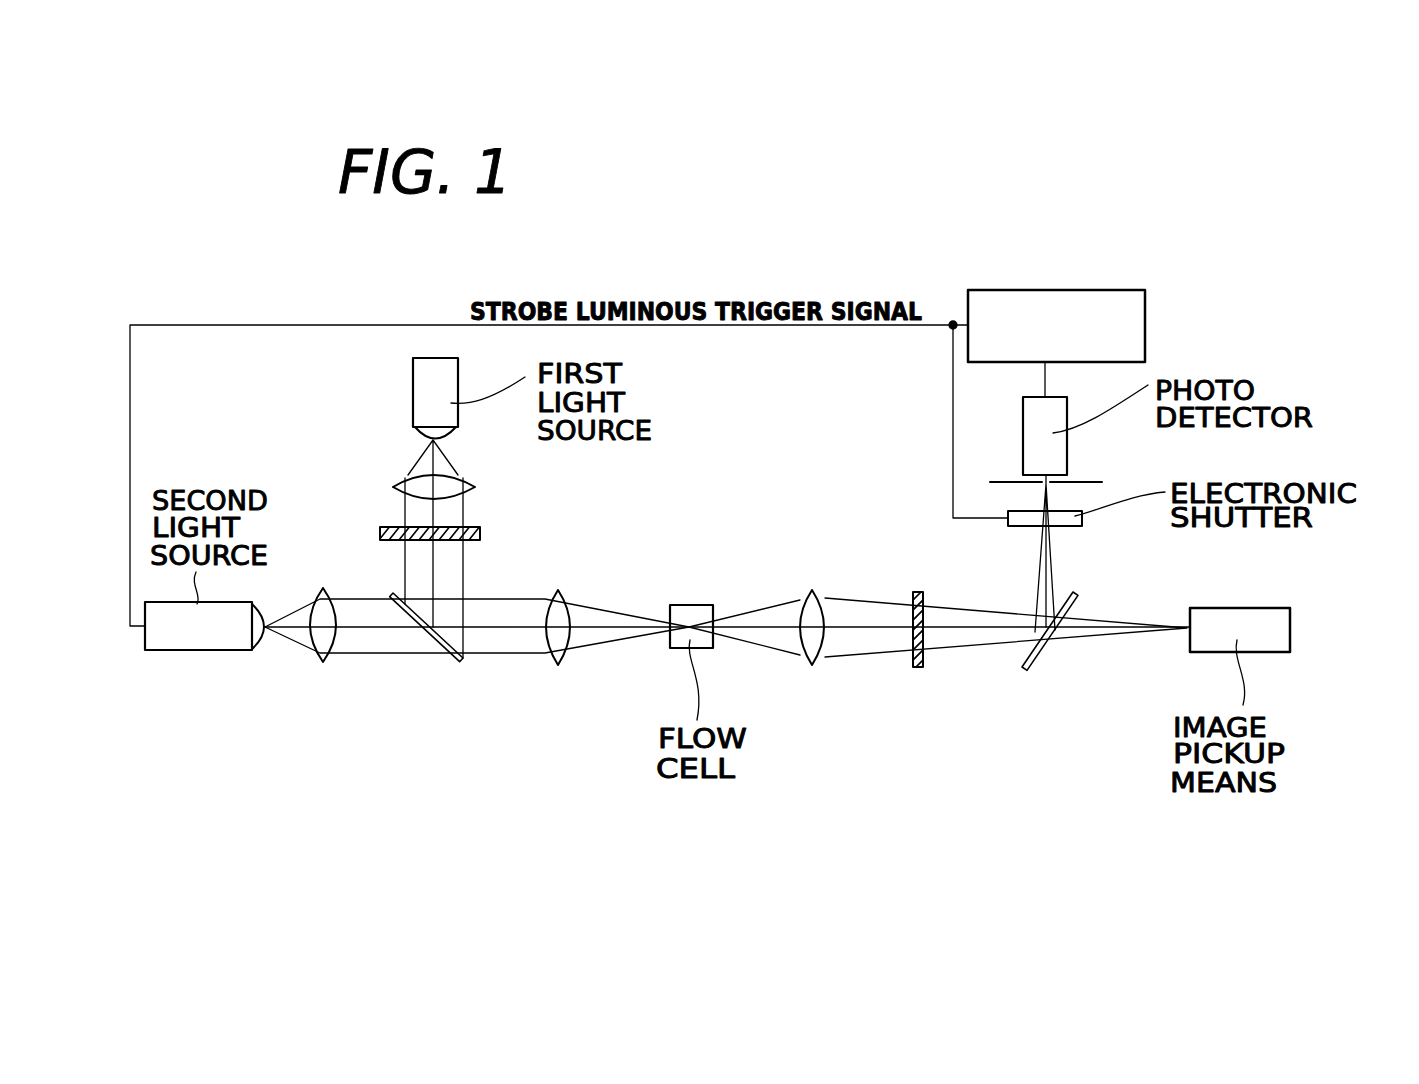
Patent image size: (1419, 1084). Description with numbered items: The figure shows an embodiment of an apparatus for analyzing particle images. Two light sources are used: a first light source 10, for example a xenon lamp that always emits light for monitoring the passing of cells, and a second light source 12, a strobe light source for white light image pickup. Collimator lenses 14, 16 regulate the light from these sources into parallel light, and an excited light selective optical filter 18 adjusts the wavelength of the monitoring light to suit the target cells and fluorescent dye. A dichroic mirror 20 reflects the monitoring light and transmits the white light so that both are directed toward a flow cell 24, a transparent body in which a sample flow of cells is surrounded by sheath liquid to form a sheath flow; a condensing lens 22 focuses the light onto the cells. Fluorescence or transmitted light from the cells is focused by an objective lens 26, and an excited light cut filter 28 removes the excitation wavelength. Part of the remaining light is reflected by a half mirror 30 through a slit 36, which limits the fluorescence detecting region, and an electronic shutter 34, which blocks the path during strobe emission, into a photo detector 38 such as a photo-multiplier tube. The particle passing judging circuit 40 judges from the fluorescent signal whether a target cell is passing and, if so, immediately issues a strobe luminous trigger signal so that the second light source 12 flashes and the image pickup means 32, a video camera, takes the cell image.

The first light source 10 is at (413, 402).
The second light source 12 is at (175, 652).
The collimator lens 14 is at (323, 662).
The collimator lens 16 is at (475, 482).
The excited light selective optical filter 18 is at (481, 534).
The dichroic mirror 20 is at (460, 662).
The condensing lens 22 is at (575, 658).
The flow cell 24 is at (692, 605).
The objective lens 26 is at (815, 592).
The excited light cut filter 28 is at (913, 668).
The half mirror 30 is at (1032, 670).
The image pickup means 32 is at (1205, 607).
The electronic shutter 34 is at (1078, 525).
The slit 36 is at (1100, 482).
The photo detector 38 is at (1023, 449).
The particle passing judging circuit 40 is at (1146, 323).